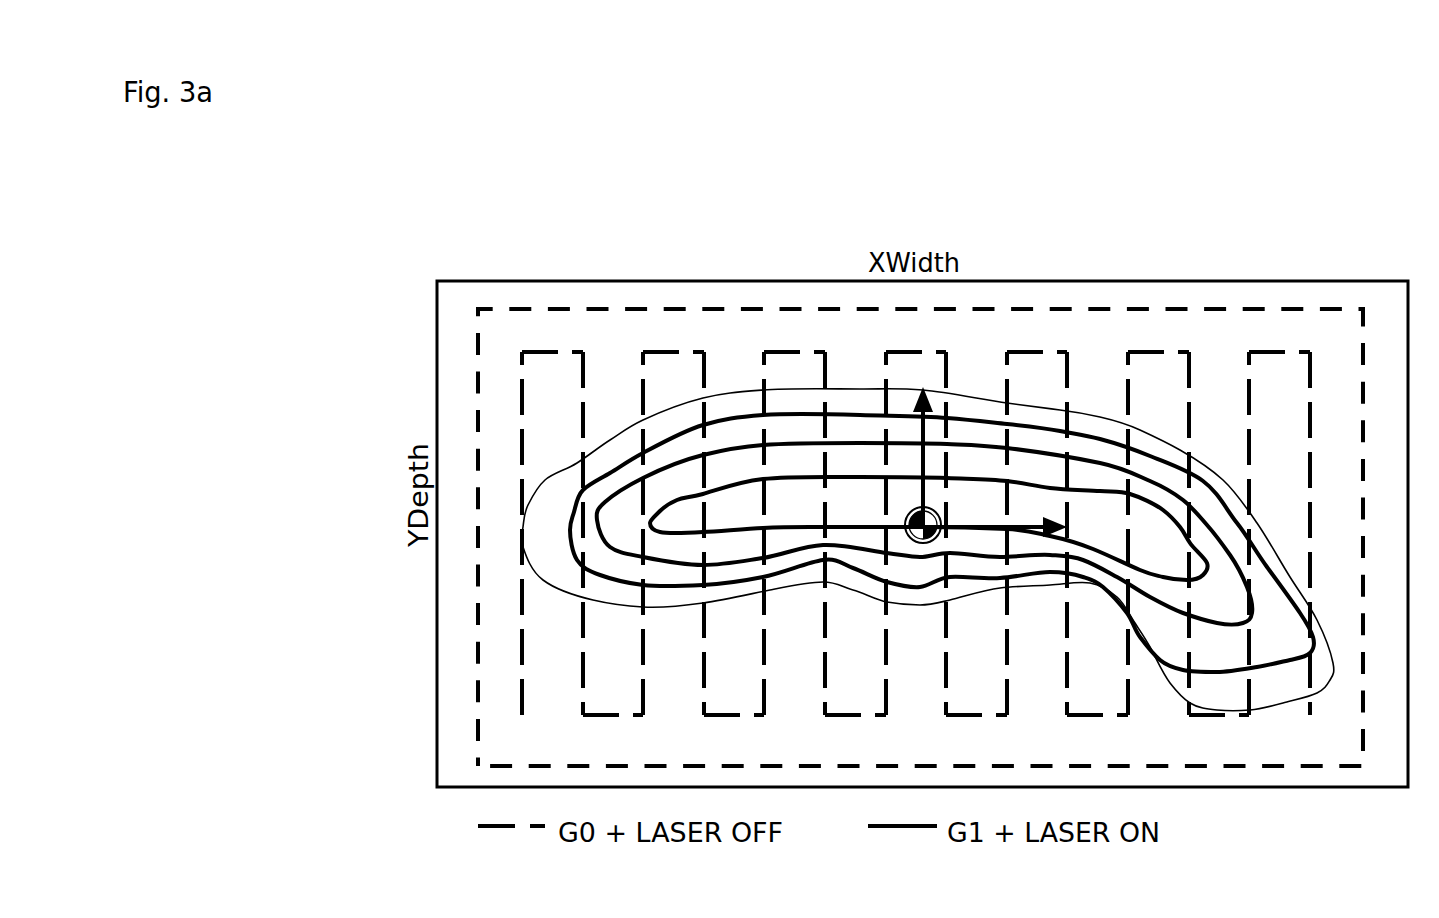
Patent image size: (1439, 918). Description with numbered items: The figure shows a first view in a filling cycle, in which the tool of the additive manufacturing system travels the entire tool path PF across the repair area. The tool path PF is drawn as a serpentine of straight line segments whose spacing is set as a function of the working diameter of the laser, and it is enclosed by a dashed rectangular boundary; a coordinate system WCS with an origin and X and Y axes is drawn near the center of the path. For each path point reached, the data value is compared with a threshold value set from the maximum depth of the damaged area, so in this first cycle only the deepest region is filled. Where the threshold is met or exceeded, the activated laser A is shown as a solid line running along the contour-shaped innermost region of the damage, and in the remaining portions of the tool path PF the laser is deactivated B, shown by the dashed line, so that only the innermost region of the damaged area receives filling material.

The activated laser A is at (760, 490).
The deactivated laser B is at (583, 355).
The tool path PF is at (1036, 306).
The workpiece coordinate system WCS is at (999, 452).